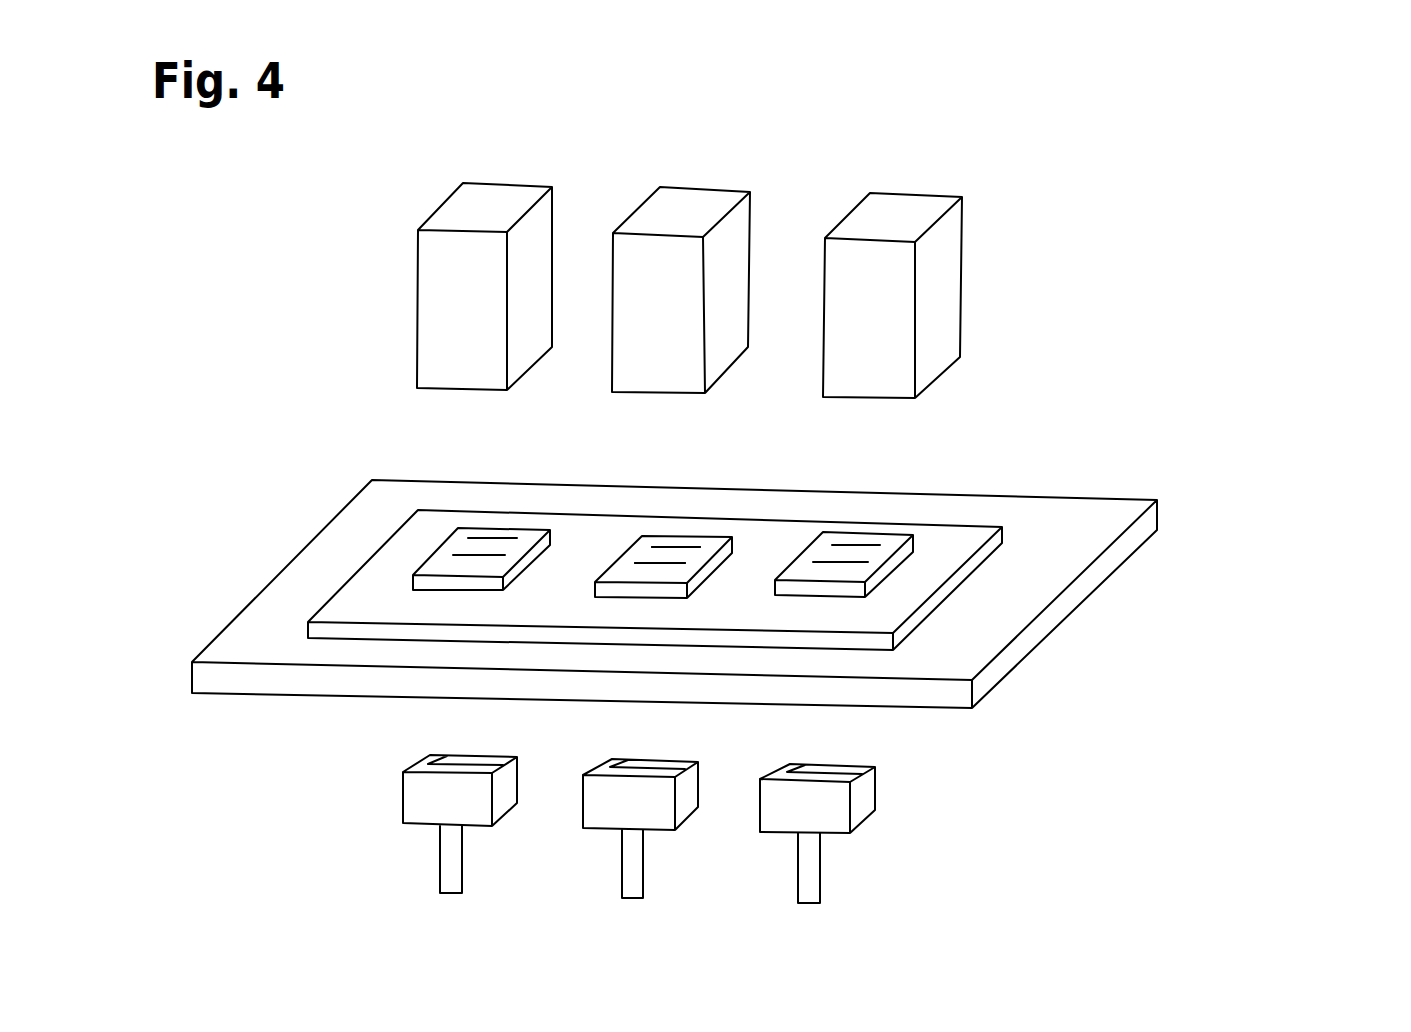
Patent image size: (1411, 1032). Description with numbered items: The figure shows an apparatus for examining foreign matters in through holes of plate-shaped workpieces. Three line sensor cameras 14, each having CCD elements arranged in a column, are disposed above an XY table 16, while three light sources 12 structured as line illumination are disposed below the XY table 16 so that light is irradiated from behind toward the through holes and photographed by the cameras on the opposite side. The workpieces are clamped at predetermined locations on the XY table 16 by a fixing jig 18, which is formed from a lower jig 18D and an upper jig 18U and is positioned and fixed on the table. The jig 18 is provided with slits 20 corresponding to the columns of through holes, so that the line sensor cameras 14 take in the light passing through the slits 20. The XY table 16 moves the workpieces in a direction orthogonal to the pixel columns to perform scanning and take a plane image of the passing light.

The light source 12 is at (833, 815).
The line sensor camera 14 is at (930, 347).
The XY table 16 is at (1002, 660).
The fixing jig 18 is at (840, 594).
The upper jig 18U is at (870, 553).
The lower jig 18D is at (870, 618).
The slit 20 is at (673, 546).